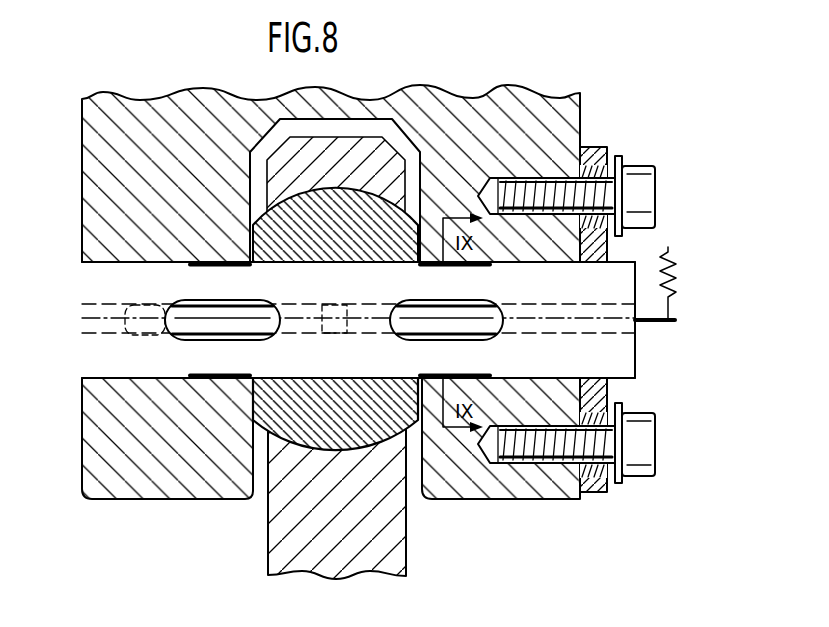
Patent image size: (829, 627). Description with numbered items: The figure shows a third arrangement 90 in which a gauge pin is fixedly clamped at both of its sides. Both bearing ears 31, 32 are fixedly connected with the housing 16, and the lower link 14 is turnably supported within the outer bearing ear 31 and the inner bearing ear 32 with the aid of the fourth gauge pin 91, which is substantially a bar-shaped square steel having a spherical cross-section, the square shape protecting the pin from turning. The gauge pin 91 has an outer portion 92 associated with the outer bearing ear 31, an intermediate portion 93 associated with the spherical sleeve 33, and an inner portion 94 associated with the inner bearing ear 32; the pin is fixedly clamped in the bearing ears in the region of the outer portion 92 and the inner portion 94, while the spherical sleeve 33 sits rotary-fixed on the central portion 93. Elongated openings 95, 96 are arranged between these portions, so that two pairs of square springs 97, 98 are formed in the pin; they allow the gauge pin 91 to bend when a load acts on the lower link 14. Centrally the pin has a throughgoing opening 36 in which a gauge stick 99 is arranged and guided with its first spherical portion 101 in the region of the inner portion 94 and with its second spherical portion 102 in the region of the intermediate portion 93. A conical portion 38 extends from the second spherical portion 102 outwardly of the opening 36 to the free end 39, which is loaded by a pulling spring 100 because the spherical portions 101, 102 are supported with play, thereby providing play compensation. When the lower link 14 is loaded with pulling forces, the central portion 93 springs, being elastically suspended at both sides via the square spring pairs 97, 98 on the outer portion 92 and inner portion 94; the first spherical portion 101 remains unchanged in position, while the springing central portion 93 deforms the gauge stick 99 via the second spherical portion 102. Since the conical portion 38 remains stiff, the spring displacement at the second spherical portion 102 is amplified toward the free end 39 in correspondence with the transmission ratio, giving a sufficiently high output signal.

The lower link 14 is at (392, 547).
The housing 16 is at (481, 100).
The outer bearing ear 31 is at (532, 482).
The inner bearing ear 32 is at (150, 485).
The spherical sleeve 33 is at (322, 432).
The throughgoing opening 36 is at (572, 312).
The conical portion 38 is at (553, 326).
The free end 39 is at (660, 324).
The third arrangement 90 is at (592, 91).
The fourth gauge pin 91 is at (76, 262).
The outer portion 92 is at (564, 281).
The intermediate portion 93 is at (360, 281).
The inner portion 94 is at (177, 281).
The elongated opening 95 is at (436, 336).
The elongated opening 96 is at (216, 336).
The square spring pair 97 is at (456, 302).
The square spring pair 98 is at (470, 367).
The gauge stick 99 is at (238, 338).
The pulling spring 100 is at (668, 247).
The first spherical portion 101 is at (139, 335).
The second spherical portion 102 is at (334, 334).